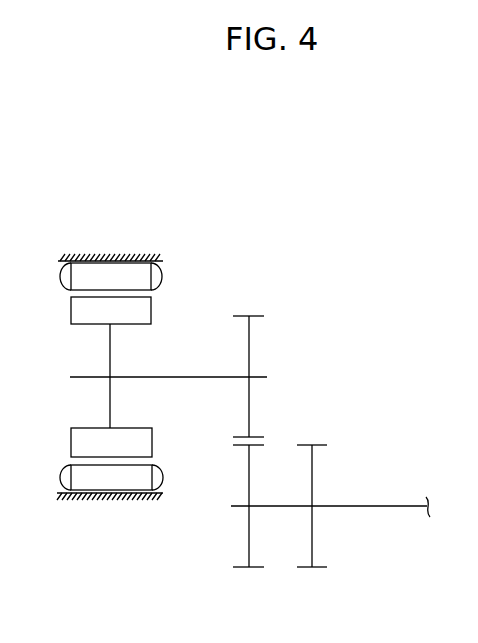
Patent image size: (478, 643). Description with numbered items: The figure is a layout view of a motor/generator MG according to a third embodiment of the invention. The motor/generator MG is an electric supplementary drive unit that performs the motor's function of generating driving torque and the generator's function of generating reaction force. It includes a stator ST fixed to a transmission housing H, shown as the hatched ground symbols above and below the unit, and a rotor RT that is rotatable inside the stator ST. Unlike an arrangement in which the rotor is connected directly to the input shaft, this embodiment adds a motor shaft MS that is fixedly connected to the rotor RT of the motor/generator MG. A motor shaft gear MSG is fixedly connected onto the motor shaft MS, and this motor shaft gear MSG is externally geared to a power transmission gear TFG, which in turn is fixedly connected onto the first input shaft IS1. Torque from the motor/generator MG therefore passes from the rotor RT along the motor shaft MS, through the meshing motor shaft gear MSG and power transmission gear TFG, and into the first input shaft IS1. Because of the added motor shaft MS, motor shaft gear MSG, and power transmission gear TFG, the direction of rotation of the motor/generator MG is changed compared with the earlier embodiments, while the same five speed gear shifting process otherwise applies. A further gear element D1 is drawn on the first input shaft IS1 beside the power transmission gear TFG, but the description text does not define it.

The transmission housing H is at (107, 258).
The stator ST is at (111, 376).
The rotor RT is at (111, 377).
The motor/generator MG is at (57, 267).
The motor shaft MS is at (186, 375).
The motor shaft gear MSG is at (251, 342).
The power transmission gear TFG is at (248, 476).
The first differential gear D1 is at (314, 468).
The first input shaft IS1 is at (397, 508).